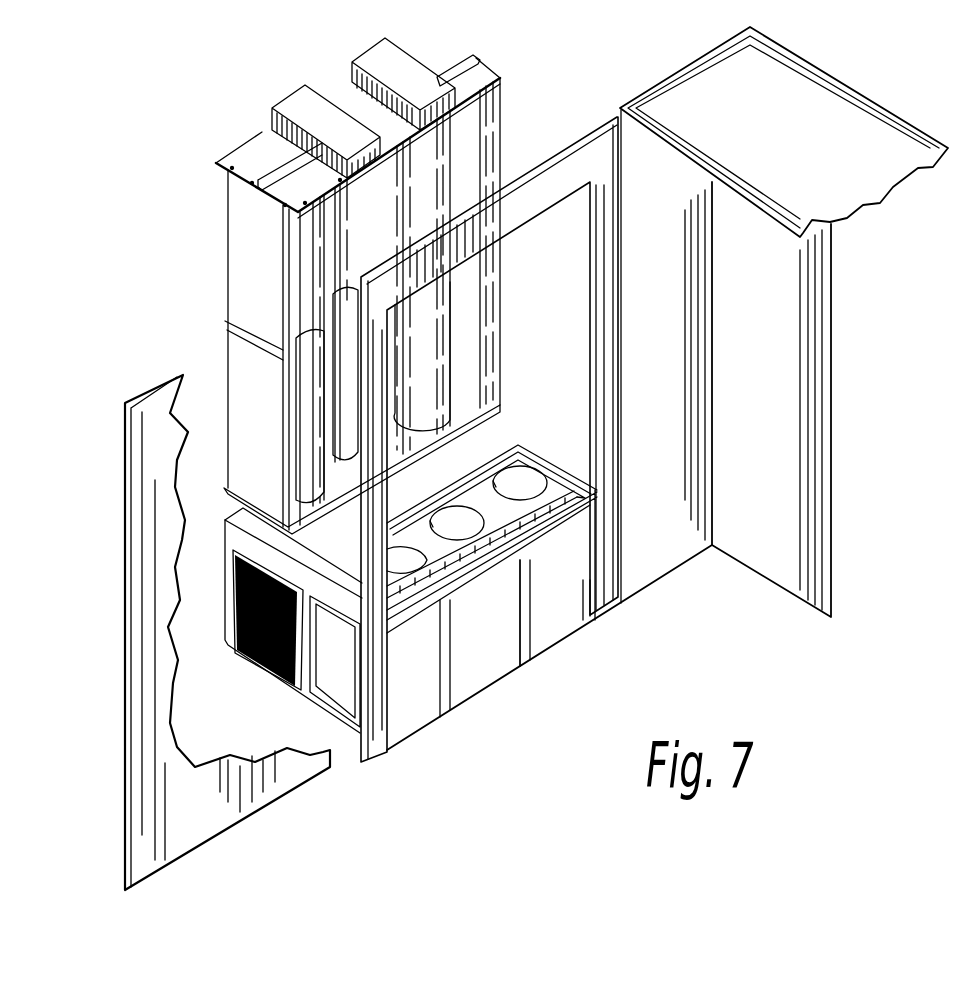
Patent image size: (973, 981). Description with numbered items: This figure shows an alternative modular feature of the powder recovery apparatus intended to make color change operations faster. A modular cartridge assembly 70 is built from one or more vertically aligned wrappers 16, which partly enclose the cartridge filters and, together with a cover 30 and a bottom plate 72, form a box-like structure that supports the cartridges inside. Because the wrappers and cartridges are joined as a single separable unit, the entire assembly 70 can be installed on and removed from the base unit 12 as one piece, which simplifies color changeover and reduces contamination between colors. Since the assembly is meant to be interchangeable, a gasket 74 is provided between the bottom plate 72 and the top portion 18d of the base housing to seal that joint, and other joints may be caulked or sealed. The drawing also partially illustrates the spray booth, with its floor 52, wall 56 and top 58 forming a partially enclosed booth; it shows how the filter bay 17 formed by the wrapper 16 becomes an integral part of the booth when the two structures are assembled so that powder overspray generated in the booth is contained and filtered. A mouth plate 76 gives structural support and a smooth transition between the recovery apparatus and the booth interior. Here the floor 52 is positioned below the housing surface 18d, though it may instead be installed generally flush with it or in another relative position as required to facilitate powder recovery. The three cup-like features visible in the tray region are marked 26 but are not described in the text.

The modular cartridge assembly 70 is at (178, 172).
The cover 30 is at (253, 137).
The wrapper 16 is at (242, 260).
The filter bay 17 is at (463, 287).
The bottom plate 72 is at (467, 403).
The cup receptacles 26 is at (528, 476).
The gasket 74 is at (562, 463).
The mouth plate 76 is at (607, 285).
The top 58 is at (843, 120).
The wall 56 is at (783, 481).
The floor 52 is at (689, 641).
The base unit 12 is at (274, 694).
The top portion of the base housing 18d is at (530, 525).